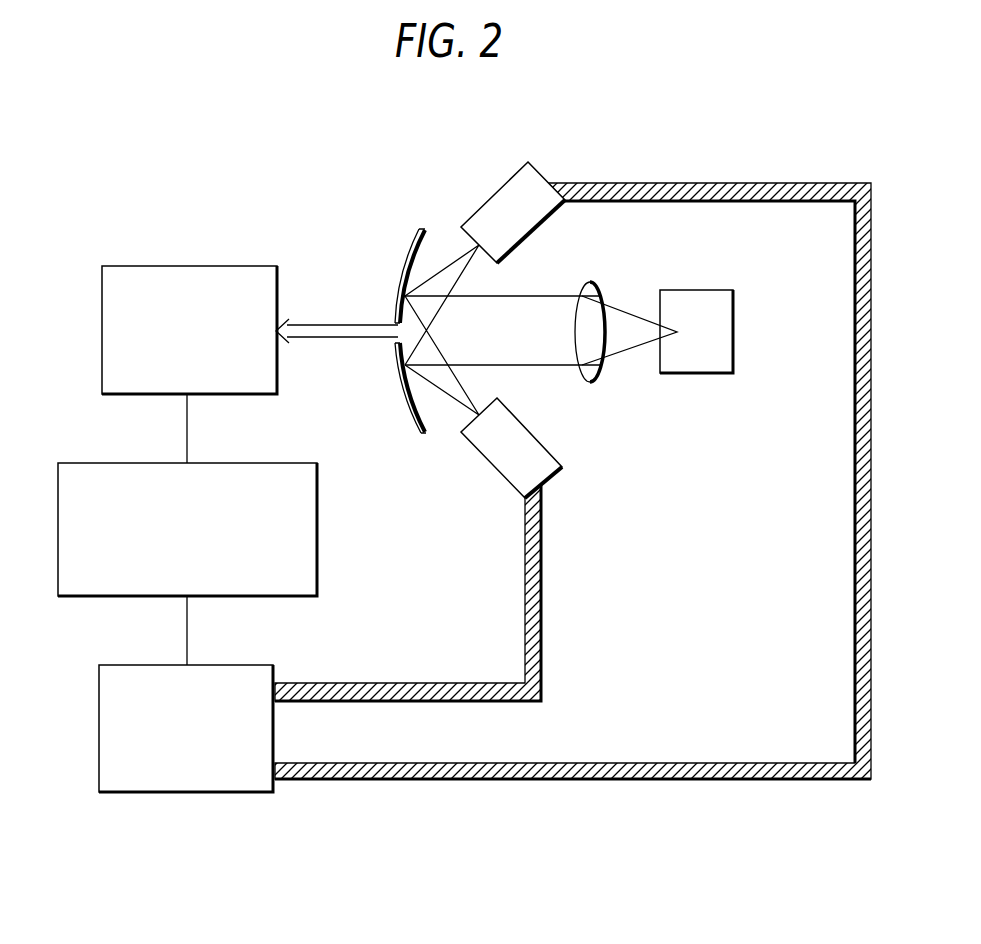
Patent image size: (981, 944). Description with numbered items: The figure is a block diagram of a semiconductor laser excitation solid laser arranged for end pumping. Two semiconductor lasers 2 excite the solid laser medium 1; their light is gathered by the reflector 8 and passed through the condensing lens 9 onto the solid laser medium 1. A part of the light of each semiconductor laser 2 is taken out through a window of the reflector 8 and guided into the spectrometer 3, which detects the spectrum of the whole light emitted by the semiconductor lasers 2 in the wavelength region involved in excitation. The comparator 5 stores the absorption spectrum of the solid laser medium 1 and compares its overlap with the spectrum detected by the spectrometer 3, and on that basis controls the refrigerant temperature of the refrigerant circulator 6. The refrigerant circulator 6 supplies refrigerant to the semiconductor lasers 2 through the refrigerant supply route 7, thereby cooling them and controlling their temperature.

The solid laser medium 1 is at (699, 290).
The semiconductor laser 2 is at (495, 192).
The spectrometer 3 is at (101, 331).
The comparator 5 is at (57, 529).
The refrigerant circulator 6 is at (98, 728).
The refrigerant supply route 7 is at (438, 683).
The reflector 8 is at (400, 386).
The condensing lens 9 is at (590, 282).